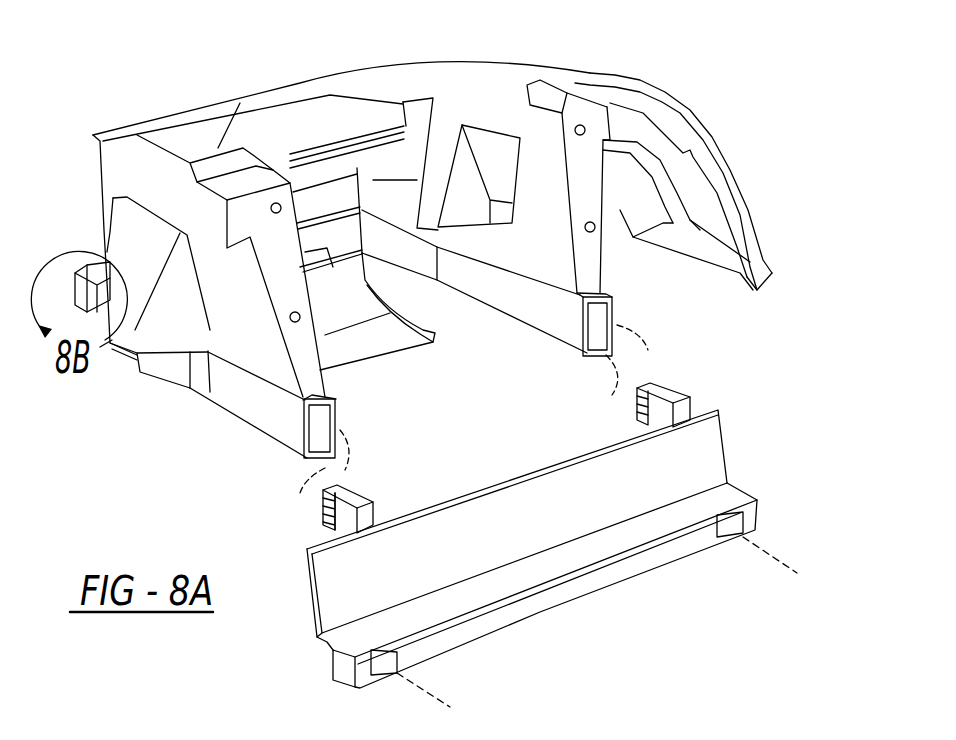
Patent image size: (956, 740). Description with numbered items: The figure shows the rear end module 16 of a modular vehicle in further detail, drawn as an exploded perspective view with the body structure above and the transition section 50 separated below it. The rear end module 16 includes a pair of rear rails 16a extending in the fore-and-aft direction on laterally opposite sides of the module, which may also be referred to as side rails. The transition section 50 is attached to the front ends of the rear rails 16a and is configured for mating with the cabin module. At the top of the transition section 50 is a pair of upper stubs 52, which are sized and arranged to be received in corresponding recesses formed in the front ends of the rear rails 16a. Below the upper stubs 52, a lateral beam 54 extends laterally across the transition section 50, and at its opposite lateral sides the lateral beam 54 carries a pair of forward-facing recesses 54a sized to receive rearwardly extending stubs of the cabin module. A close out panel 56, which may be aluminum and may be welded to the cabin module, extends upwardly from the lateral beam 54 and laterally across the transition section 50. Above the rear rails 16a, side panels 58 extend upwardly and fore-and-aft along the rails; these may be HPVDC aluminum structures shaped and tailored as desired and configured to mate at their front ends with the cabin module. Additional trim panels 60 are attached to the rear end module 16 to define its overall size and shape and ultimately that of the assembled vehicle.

The rear end module 16 is at (718, 84).
The rear rails 16a is at (235, 410).
The transition section 50 is at (748, 458).
The upper stubs 52 is at (375, 490).
The lateral beam 54 is at (603, 577).
The recesses 54a is at (700, 543).
The close out panel 56 is at (525, 505).
The side panels 58 is at (215, 257).
The trim panels 60 is at (290, 122).